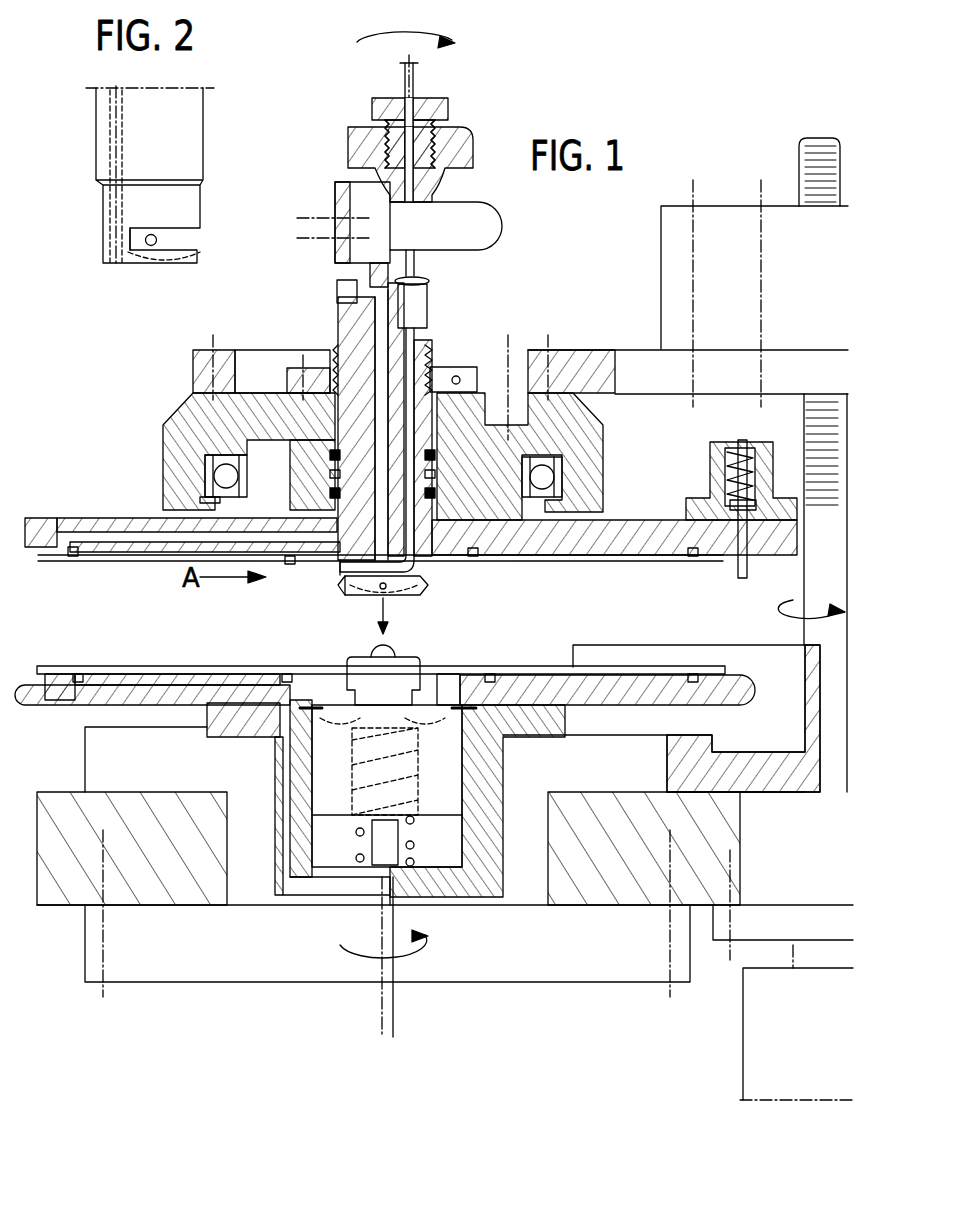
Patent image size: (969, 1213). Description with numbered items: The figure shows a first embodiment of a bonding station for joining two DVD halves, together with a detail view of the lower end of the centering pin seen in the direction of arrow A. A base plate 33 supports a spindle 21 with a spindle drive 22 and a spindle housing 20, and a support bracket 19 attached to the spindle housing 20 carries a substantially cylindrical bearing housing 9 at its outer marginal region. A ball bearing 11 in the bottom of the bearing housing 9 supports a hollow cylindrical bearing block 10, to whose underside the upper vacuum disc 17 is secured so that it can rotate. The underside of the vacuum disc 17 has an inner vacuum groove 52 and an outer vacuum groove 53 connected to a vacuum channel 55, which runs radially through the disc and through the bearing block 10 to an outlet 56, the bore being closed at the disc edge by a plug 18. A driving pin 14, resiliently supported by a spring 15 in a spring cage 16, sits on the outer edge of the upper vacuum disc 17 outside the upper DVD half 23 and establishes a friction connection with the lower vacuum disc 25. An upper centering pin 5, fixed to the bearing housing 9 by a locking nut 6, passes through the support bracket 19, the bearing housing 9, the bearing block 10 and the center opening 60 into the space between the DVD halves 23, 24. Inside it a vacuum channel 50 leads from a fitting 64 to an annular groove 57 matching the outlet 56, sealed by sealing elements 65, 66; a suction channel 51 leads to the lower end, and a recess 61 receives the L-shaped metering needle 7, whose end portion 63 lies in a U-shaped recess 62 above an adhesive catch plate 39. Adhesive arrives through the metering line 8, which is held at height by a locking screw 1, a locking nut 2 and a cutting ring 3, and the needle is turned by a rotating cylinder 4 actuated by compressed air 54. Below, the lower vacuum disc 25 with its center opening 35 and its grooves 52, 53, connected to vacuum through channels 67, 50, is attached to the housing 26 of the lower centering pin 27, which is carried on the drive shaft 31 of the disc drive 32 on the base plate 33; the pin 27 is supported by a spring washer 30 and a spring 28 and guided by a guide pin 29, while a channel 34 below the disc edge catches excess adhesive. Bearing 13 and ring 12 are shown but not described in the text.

In FIG. 1, the locking screw 1 is at (446, 98).
In FIG. 1, the locking nut 2 is at (465, 138).
In FIG. 1, the cutting ring 3 is at (438, 152).
In FIG. 1, the rotating cylinder 4 is at (498, 222).
In FIG. 2, the upper centering pin 5 is at (200, 118).
In FIG. 1, the upper centering pin 5 is at (346, 322).
In FIG. 1, the locking nut 6 is at (470, 368).
In FIG. 2, the metering needle 7 is at (148, 238).
In FIG. 1, the metering needle 7 is at (424, 306).
In FIG. 1, the metering line 8 is at (405, 76).
In FIG. 1, the bearing housing 9 is at (170, 432).
In FIG. 1, the bearing block 10 is at (515, 400).
In FIG. 1, the ball bearing 11 is at (224, 475).
In FIG. 1, the bearing ring 12 is at (205, 500).
In FIG. 1, the ball bearing 13 is at (548, 470).
In FIG. 1, the driving pin 14 is at (740, 566).
In FIG. 1, the spring 15 is at (726, 474).
In FIG. 1, the spring cage 16 is at (722, 450).
In FIG. 1, the upper vacuum disc 17 is at (650, 536).
In FIG. 1, the plug 18 is at (368, 276).
In FIG. 1, the support bracket 19 is at (590, 365).
In FIG. 1, the spindle housing 20 is at (662, 266).
In FIG. 1, the spindle 21 is at (806, 568).
In FIG. 1, the spindle drive 22 is at (750, 1038).
In FIG. 1, the upper DVD half 23 is at (572, 562).
In FIG. 1, the lower DVD half 24 is at (545, 668).
In FIG. 1, the lower vacuum disc 25 is at (160, 672).
In FIG. 1, the housing 26 is at (548, 730).
In FIG. 1, the lower centering pin 27 is at (395, 672).
In FIG. 1, the spring 28 is at (318, 780).
In FIG. 1, the guide pin 29 is at (400, 840).
In FIG. 1, the spring washer 30 is at (485, 740).
In FIG. 1, the drive shaft 31 is at (415, 905).
In FIG. 1, the disc drive 32 is at (190, 965).
In FIG. 1, the base plate 33 is at (600, 900).
In FIG. 1, the channel 34 is at (762, 740).
In FIG. 1, the center opening 35 is at (460, 678).
In FIG. 2, the adhesive catch plate 39 is at (158, 262).
In FIG. 1, the adhesive catch plate 39 is at (395, 595).
In FIG. 1, the vacuum channel 50 is at (376, 332).
In FIG. 2, the channel 51 is at (100, 124).
In FIG. 1, the channel 51 is at (380, 592).
In FIG. 1, the inner vacuum groove 52 is at (290, 566).
In FIG. 1, the outer vacuum groove 53 is at (74, 558).
In FIG. 1, the compressed air 54 is at (300, 215).
In FIG. 1, the vacuum channel 55 is at (120, 528).
In FIG. 1, the outlet 56 is at (330, 470).
In FIG. 1, the annular groove 57 is at (340, 472).
In FIG. 1, the center opening 60 is at (330, 565).
In FIG. 1, the recess 61 is at (433, 352).
In FIG. 2, the U-shaped recess 62 is at (185, 236).
In FIG. 1, the U-shaped recess 62 is at (429, 585).
In FIG. 1, the end portion 63 is at (348, 594).
In FIG. 1, the fitting 64 is at (337, 292).
In FIG. 1, the sealing element 65 is at (337, 450).
In FIG. 1, the sealing element 66 is at (340, 494).
In FIG. 1, the vacuum channel 67 is at (212, 676).